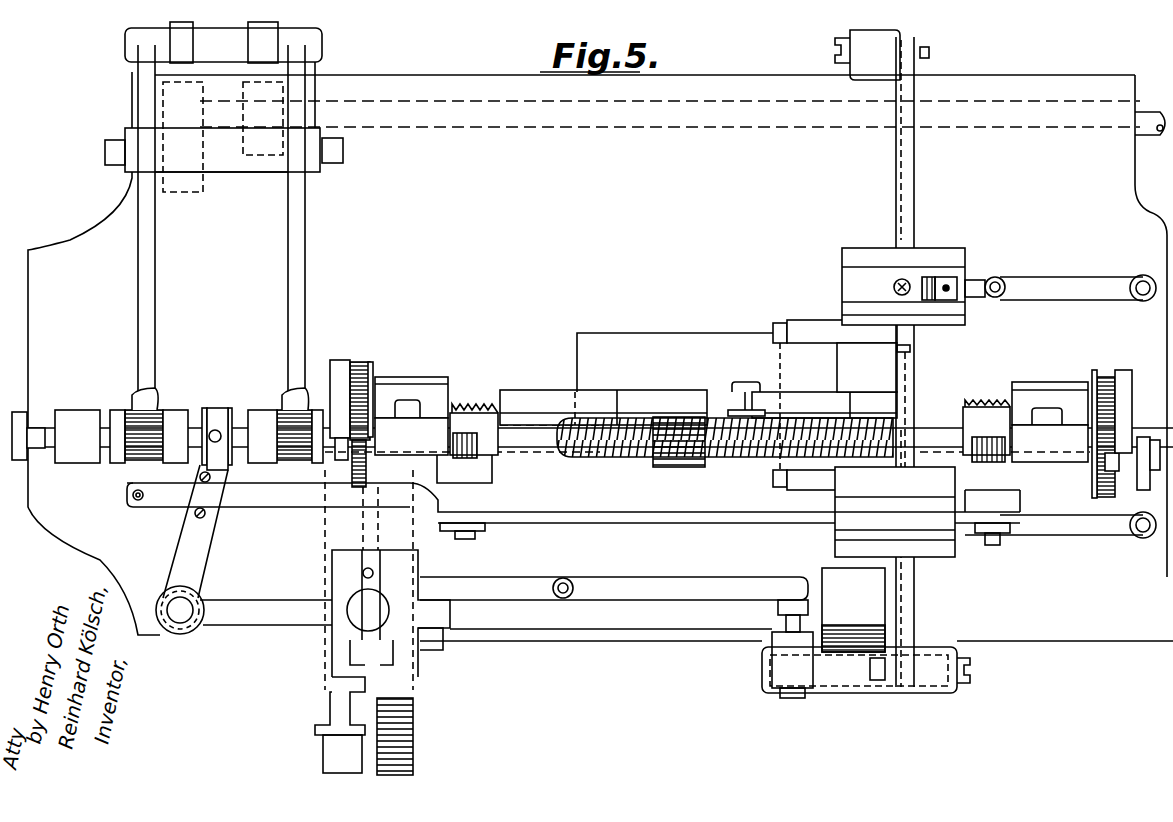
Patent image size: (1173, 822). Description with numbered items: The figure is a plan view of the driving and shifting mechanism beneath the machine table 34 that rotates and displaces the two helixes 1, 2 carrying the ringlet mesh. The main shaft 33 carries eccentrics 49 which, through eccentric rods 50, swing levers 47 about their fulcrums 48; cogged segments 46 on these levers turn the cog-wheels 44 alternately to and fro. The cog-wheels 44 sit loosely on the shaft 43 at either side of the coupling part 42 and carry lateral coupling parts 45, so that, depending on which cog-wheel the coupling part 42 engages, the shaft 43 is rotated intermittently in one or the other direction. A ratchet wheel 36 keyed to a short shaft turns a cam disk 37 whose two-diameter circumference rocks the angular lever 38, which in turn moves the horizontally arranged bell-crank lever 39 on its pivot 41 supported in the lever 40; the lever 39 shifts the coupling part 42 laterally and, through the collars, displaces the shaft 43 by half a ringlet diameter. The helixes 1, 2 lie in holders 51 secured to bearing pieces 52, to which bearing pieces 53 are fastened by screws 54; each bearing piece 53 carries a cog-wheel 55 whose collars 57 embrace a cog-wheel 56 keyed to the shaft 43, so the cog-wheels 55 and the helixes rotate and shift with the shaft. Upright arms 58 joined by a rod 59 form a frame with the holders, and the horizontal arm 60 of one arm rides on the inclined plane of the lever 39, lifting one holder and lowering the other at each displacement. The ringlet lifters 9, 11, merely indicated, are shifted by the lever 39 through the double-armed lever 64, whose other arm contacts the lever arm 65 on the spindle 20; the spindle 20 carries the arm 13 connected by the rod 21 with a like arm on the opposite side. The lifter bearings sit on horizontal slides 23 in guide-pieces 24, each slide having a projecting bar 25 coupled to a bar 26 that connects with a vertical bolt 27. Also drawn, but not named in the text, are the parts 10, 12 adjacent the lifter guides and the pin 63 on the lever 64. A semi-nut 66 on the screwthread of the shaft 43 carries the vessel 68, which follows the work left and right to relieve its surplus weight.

The helix 1 is at (470, 402).
The helix 2 is at (750, 408).
The ringlet lifter 9 is at (745, 382).
The guide plate 10 is at (772, 330).
The ringlet lifter 11 is at (792, 322).
The vertical slide bar 12 is at (912, 242).
The arm 13 is at (929, 53).
The spindle 20 is at (836, 690).
The rod 21 is at (910, 379).
The horizontal slide 23 is at (962, 272).
The guide-piece 24 is at (945, 253).
The laterally projecting bar 25 is at (987, 280).
The bar 26 is at (1057, 283).
The vertical bolt 27 is at (1140, 300).
The main shaft 33 is at (498, 118).
The machine table 34 is at (603, 636).
The ratchet wheel 36 is at (414, 730).
The cam disk 37 is at (326, 754).
The angular lever 38 is at (330, 706).
The bell-crank lever 39 is at (205, 553).
The lever 40 is at (196, 622).
The pivot 41 is at (180, 622).
The coupling part 42 is at (213, 420).
The shaft 43 is at (243, 455).
The cog-wheel 44 is at (160, 412).
The lateral coupling part 45 is at (180, 418).
The cogged segment 46 is at (138, 402).
The lever 47 is at (151, 272).
The fulcrum 48 is at (235, 172).
The eccentric 49 is at (246, 82).
The eccentric rod 50 is at (189, 38).
The holder 51 is at (630, 396).
The bearing piece 52 is at (1058, 460).
The bearing piece 53 is at (447, 382).
The screw 54 is at (406, 405).
The cog-wheel 55 is at (352, 362).
The cog-wheel 56 is at (352, 472).
The collar 57 is at (372, 372).
The upright arm 58 is at (490, 503).
The rod 59 is at (576, 520).
The horizontal arm 60 is at (282, 500).
The pin 63 is at (570, 582).
The double-armed lever 64 is at (520, 596).
The lever arm 65 is at (778, 608).
The semi-nut 66 is at (660, 465).
The vessel 68 is at (605, 343).